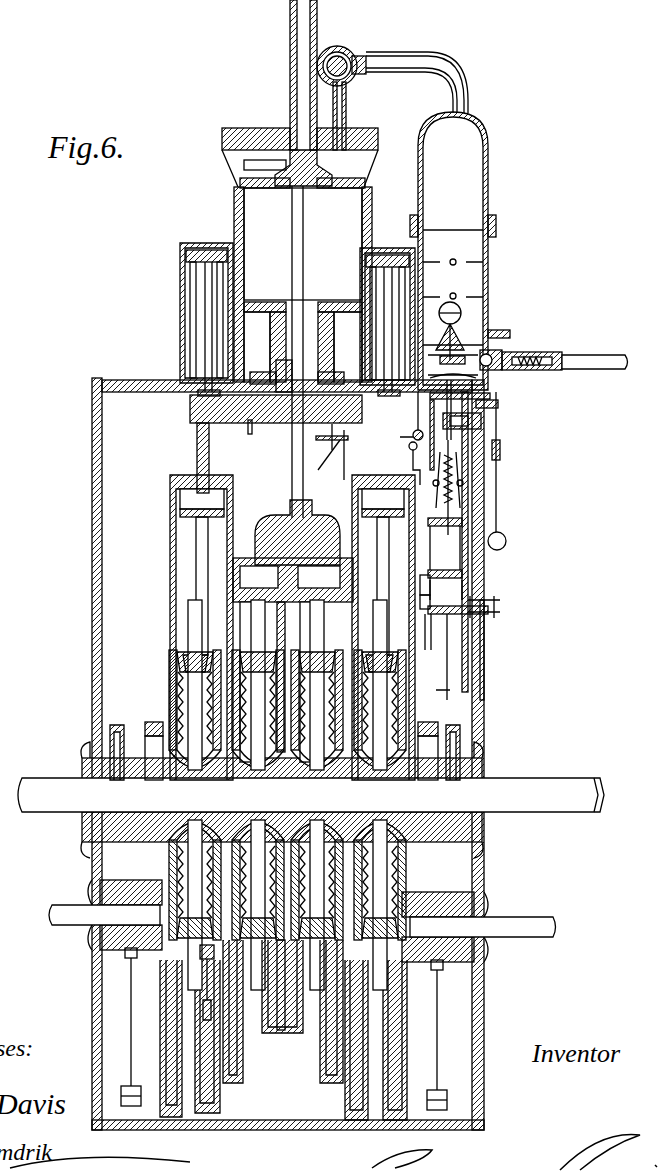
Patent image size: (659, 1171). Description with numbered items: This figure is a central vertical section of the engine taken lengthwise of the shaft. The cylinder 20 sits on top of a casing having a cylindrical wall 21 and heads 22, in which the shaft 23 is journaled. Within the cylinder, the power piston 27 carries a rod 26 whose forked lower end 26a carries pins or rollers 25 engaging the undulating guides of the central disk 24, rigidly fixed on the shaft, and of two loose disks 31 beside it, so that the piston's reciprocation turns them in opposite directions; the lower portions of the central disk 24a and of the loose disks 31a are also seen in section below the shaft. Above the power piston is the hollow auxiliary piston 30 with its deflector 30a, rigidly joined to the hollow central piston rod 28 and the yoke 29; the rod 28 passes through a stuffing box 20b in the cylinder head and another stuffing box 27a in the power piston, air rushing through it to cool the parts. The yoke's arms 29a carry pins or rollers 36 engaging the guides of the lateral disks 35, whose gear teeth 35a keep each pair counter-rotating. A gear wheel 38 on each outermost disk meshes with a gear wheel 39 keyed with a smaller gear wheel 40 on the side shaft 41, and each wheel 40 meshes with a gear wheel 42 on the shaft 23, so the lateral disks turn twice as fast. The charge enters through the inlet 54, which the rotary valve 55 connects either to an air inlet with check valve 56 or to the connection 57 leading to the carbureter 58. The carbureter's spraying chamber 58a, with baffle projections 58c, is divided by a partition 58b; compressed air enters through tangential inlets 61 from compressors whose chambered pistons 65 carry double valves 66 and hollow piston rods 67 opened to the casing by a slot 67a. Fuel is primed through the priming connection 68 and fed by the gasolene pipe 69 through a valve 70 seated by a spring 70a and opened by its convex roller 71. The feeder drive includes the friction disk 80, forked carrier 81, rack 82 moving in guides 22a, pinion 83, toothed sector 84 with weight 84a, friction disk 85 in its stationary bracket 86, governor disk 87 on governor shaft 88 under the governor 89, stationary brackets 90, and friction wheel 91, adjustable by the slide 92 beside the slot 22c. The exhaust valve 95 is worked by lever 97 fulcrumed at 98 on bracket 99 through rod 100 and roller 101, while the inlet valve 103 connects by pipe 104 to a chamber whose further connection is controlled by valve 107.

The cylinder 20 is at (236, 210).
The stuffing box 20b is at (282, 362).
The cylindrical wall 21 is at (122, 382).
The end wall or head 22 is at (102, 462).
The guides 22a is at (470, 464).
The slot 22c is at (484, 660).
The shaft 23 is at (536, 793).
The central disk 24 is at (300, 640).
The lower rod 24a is at (266, 942).
The pins or rollers 25 is at (250, 566).
The rod 26 is at (290, 462).
The forked lower end 26a is at (322, 540).
The power piston 27 is at (322, 302).
The stuffing box 27a is at (284, 302).
The central piston rod 28 is at (304, 258).
The yoke 29 is at (290, 446).
The arms 29a is at (197, 449).
The auxiliary piston 30 is at (350, 188).
The deflector 30a is at (278, 186).
The disks 31 is at (256, 624).
The lower piston rod 31a is at (325, 935).
The lateral disks 35 is at (233, 500).
The gear teeth 35a is at (410, 708).
The pins or rollers 36 is at (180, 492).
The gear wheel 38 is at (152, 722).
The gear wheel 39 is at (150, 982).
The gear wheel 40 is at (104, 946).
The shaft 41 is at (64, 906).
The gear wheel 42 is at (110, 732).
The inlet 54 is at (348, 110).
The rotary valve or cock 55 is at (357, 50).
The check valve 56 is at (335, 50).
The connection 57 is at (456, 72).
The carbureter 58 is at (492, 228).
The spraying or vaporizing chamber 58a is at (455, 283).
The partition 58b is at (470, 316).
The baffle projections 58c is at (460, 262).
The inlets 61 is at (462, 316).
The chambered piston 65 is at (198, 250).
The double valves 66 is at (190, 266).
The hollow piston rod 67 is at (205, 330).
The slot 67a is at (198, 394).
The priming connection 68 is at (508, 331).
The gasolene pipe 69 is at (606, 358).
The valve 70 is at (500, 352).
The spring 70a is at (540, 352).
The convex roller 71 is at (445, 334).
The friction disk 80 is at (455, 432).
The forked carrier 81 is at (484, 420).
The rack 82 is at (494, 396).
The pinion 83 is at (500, 404).
The toothed sector 84 is at (500, 396).
The weight 84a is at (506, 540).
The friction disk 85 is at (413, 452).
The stationary bracket 86 is at (410, 417).
The friction disk 87 is at (450, 456).
The governor shaft 88 is at (440, 556).
The governor 89 is at (458, 494).
The stationary brackets 90 is at (466, 586).
The friction wheel 91 is at (462, 632).
The slide 92 is at (490, 606).
The valve 95 is at (332, 374).
The lever 97 is at (323, 458).
The fulcrum 98 is at (334, 463).
The bracket 99 is at (336, 440).
The rod 100 is at (430, 590).
The roller 101 is at (430, 603).
The valve 103 is at (262, 374).
The pipe 104 is at (252, 424).
The valve 107 is at (434, 652).